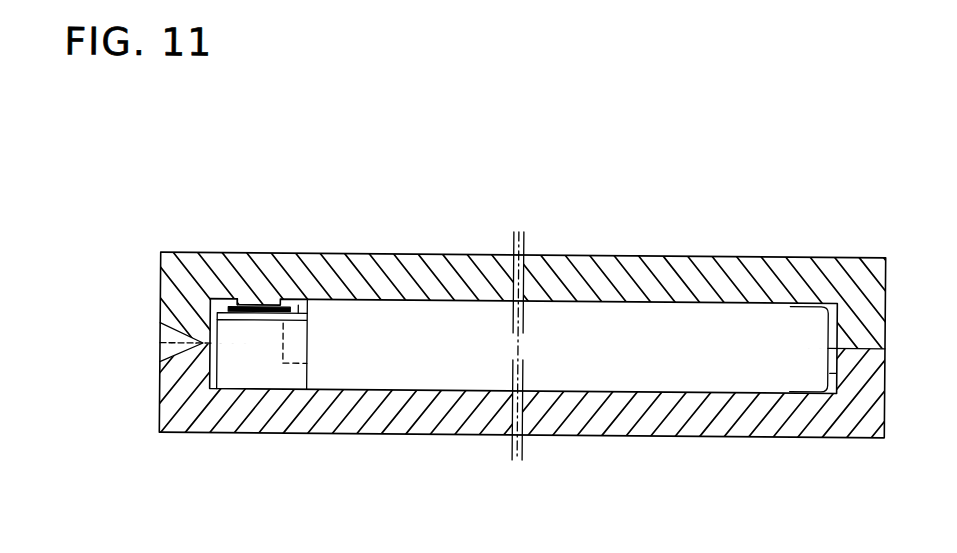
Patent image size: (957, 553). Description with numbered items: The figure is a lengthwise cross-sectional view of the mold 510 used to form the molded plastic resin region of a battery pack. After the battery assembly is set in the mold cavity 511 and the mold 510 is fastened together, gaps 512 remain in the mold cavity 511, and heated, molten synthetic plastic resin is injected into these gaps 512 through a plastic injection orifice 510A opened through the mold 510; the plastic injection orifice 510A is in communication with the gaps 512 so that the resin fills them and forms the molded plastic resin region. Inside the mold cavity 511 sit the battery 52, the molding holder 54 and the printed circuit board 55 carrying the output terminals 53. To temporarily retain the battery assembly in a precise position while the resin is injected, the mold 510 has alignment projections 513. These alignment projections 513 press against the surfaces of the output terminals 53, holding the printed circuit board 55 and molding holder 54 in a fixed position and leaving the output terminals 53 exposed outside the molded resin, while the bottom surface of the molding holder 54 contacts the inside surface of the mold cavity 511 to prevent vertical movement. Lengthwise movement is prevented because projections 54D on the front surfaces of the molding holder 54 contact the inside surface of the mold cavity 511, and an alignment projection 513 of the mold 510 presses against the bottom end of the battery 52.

The mold 510 is at (637, 276).
The plastic injection orifice 510A is at (144, 347).
The mold cavity 511 is at (276, 392).
The gap 512 is at (214, 303).
The alignment projection 513 is at (262, 309).
The battery 52 is at (443, 374).
The output terminal 53 is at (253, 314).
The molding holder 54 is at (238, 378).
The projection 54D is at (215, 356).
The printed circuit board 55 is at (298, 309).